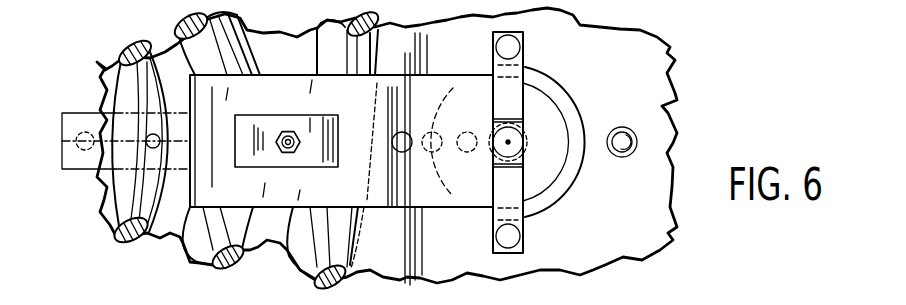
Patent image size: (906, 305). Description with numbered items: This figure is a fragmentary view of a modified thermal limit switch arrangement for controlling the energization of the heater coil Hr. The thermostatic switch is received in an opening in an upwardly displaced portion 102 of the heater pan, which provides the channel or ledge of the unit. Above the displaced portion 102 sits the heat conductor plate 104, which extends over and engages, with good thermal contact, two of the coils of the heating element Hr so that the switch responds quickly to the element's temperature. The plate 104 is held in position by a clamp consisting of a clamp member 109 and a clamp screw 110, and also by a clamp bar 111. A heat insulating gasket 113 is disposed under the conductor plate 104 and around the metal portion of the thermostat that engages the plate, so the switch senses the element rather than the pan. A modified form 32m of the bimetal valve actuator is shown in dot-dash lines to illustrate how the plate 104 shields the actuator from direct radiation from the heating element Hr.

The upwardly displaced portion 102 is at (660, 106).
The heat conductor plate 104 is at (558, 126).
The clamp member 109 is at (261, 130).
The clamp screw 110 is at (288, 155).
The clamp bar 111 is at (515, 52).
The heat insulating gasket 113 is at (586, 144).
The modified form of the bimetal actuator 32m is at (363, 158).
The heater coil Hr is at (110, 64).